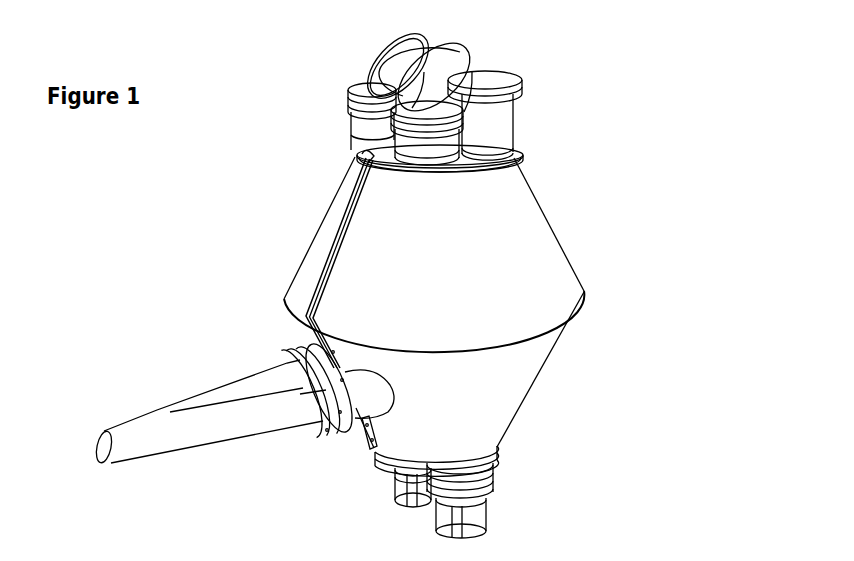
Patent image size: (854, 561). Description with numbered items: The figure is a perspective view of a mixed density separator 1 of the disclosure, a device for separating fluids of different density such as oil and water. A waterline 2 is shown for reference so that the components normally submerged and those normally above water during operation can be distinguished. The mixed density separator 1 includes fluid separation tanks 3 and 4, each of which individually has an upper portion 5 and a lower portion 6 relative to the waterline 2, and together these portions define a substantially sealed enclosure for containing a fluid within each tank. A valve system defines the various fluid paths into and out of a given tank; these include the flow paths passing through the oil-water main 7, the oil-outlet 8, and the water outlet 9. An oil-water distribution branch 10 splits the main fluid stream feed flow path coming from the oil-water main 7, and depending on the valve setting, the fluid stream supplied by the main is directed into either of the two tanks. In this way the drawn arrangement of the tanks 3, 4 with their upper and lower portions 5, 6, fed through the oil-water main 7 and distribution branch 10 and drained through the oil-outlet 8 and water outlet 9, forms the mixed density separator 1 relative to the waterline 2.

The mixed density separator 1 is at (421, 280).
The waterline 2 is at (595, 300).
The fluid separation tank 3 is at (300, 247).
The fluid separation tank 4 is at (543, 248).
The upper portion 5 is at (456, 284).
The lower portion 6 is at (456, 409).
The oil-water main 7 is at (143, 407).
The oil-outlet 8 is at (478, 57).
The water outlet 9 is at (505, 505).
The oil-water distribution branch 10 is at (272, 447).